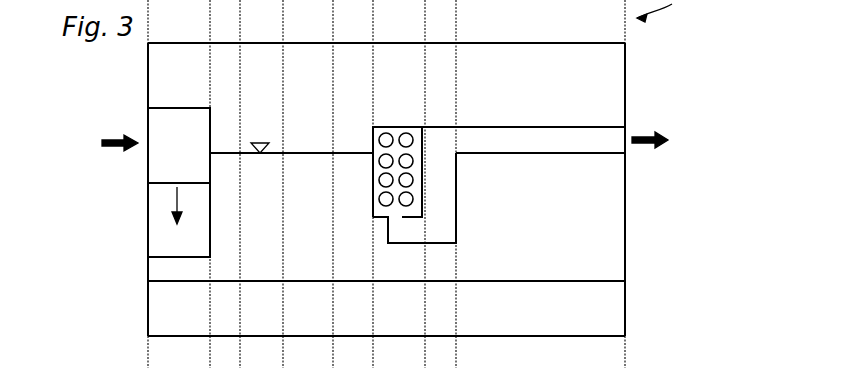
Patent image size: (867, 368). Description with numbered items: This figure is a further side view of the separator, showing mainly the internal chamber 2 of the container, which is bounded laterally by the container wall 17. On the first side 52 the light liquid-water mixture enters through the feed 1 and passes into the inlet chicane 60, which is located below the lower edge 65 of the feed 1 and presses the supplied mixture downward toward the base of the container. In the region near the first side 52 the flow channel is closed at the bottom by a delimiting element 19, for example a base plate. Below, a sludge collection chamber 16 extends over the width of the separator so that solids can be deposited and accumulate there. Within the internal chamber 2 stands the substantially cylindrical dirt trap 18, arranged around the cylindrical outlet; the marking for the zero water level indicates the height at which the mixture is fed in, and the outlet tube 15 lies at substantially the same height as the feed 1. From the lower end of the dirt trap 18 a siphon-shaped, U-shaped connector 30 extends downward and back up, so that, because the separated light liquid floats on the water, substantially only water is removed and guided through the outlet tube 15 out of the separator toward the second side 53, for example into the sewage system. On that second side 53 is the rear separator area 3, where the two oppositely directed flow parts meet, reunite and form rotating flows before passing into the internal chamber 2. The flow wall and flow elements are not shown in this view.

The feed 1 is at (148, 122).
The internal chamber 2 is at (316, 227).
The rear separator area 3 is at (582, 212).
The outlet tube 15 is at (524, 125).
The sludge collection chamber 16 is at (520, 320).
The container wall 17 is at (627, 82).
The dirt trap 18 is at (384, 127).
The delimiting element 19 is at (170, 262).
The connector 30 is at (462, 183).
The first side 52 is at (148, 272).
The second side 53 is at (628, 200).
The inlet chicane 60 is at (148, 208).
The lower edge 65 is at (147, 166).